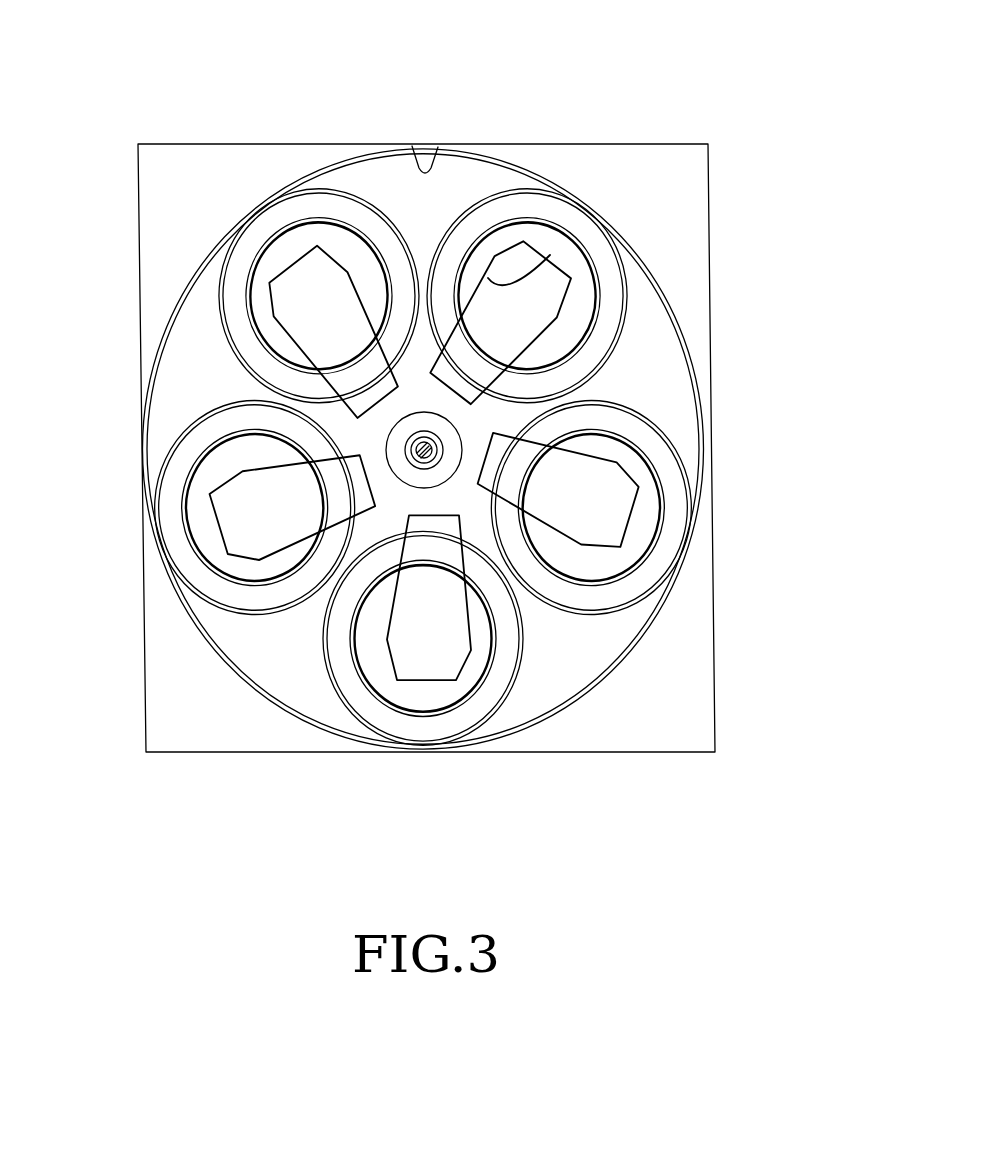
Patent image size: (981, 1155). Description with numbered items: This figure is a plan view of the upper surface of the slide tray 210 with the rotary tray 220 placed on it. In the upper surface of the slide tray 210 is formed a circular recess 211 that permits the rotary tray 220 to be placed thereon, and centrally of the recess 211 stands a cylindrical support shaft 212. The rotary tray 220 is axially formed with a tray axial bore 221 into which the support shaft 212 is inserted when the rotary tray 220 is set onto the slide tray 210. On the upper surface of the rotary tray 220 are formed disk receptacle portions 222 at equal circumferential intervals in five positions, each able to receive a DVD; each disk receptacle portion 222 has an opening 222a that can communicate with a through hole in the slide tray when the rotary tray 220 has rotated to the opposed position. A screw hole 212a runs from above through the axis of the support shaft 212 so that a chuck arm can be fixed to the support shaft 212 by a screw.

The slide tray 210 is at (710, 222).
The circular recess 211 is at (437, 150).
The support shaft 212 is at (437, 459).
The screw hole 212a is at (412, 460).
The rotary tray 220 is at (503, 162).
The tray axial bore 221 is at (415, 457).
The disk receptacle portions 222 is at (608, 327).
The opening 222a is at (543, 265).